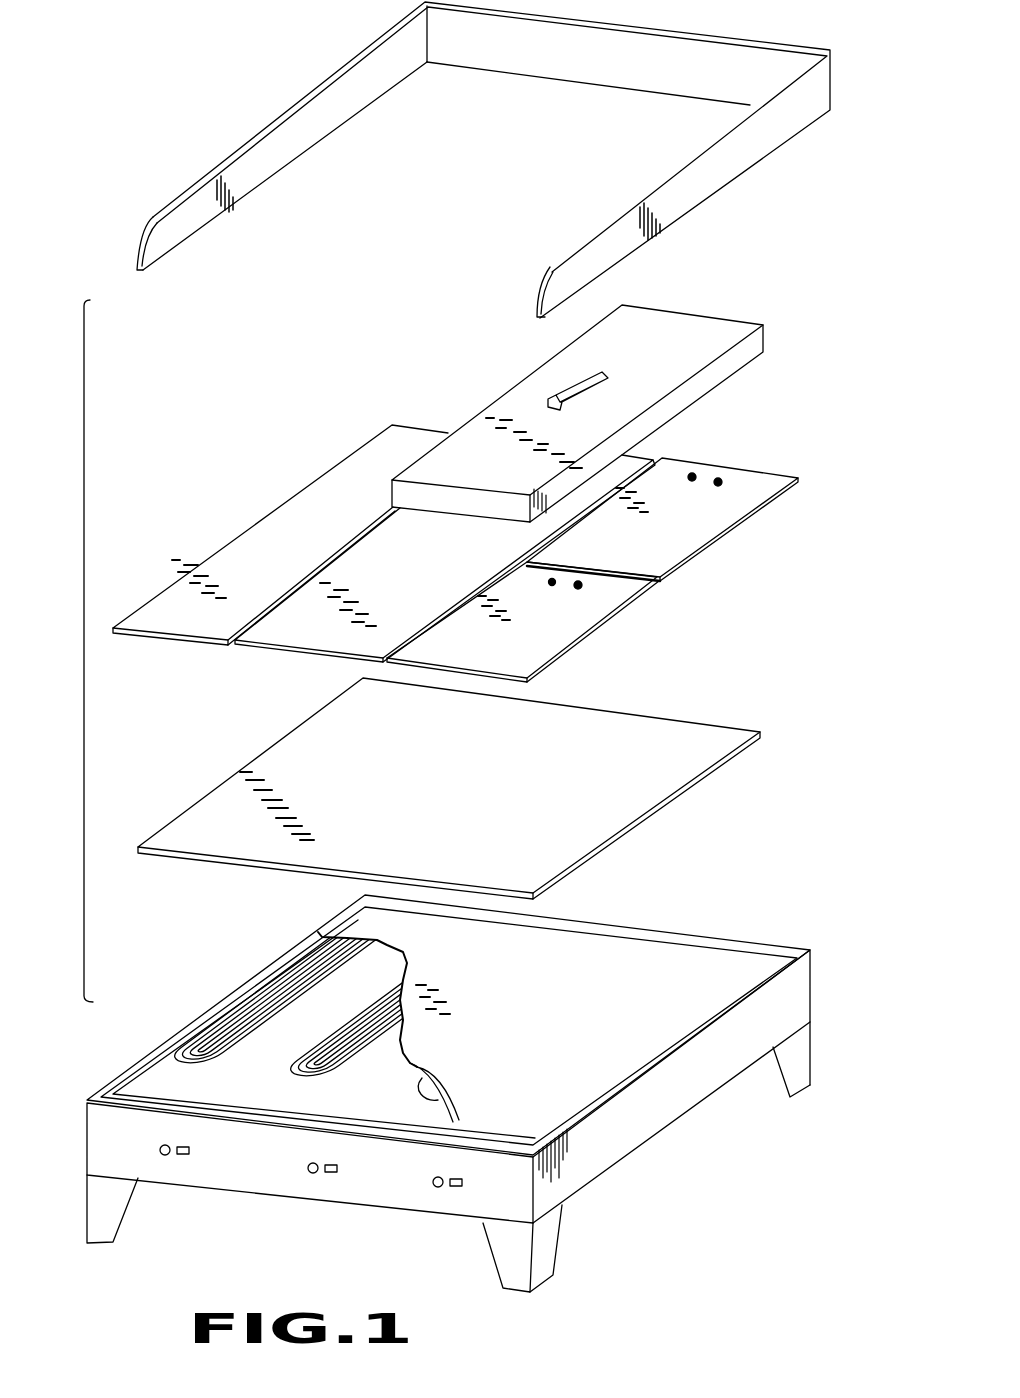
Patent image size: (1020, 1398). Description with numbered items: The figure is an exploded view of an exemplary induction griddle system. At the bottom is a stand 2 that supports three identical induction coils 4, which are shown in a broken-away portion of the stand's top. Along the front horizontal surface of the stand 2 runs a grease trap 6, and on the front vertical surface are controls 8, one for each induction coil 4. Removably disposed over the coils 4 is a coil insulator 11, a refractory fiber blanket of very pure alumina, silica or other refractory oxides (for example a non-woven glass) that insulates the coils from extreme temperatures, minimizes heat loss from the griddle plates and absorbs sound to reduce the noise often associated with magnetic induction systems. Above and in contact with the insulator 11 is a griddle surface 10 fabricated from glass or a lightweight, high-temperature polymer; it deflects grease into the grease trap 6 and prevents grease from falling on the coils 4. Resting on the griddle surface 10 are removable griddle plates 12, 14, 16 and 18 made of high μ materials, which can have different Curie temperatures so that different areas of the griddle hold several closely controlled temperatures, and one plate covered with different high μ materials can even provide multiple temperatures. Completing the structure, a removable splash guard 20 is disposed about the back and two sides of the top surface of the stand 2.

The stand 2 is at (440, 1228).
The induction coils 4 is at (313, 1057).
The grease trap 6 is at (387, 1140).
The controls 8 is at (311, 1180).
The griddle surface 10 is at (444, 812).
The coil insulator 11 is at (534, 1028).
The griddle plate 12 is at (299, 567).
The griddle plate 14 is at (421, 591).
The griddle plate 16 is at (675, 538).
The griddle plate 18 is at (538, 634).
The splash guard 20 is at (160, 266).